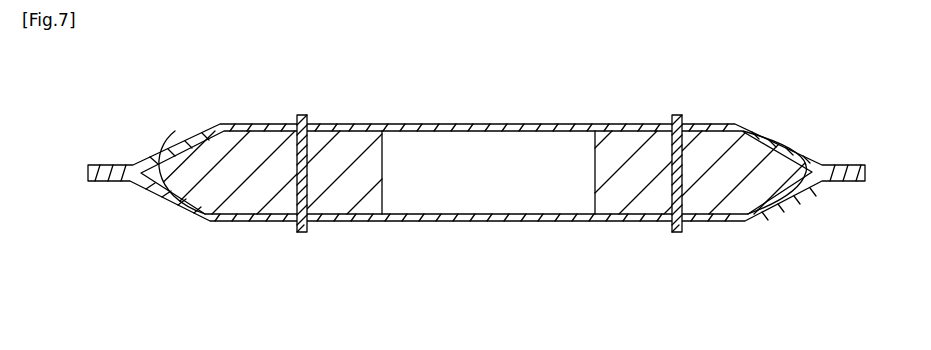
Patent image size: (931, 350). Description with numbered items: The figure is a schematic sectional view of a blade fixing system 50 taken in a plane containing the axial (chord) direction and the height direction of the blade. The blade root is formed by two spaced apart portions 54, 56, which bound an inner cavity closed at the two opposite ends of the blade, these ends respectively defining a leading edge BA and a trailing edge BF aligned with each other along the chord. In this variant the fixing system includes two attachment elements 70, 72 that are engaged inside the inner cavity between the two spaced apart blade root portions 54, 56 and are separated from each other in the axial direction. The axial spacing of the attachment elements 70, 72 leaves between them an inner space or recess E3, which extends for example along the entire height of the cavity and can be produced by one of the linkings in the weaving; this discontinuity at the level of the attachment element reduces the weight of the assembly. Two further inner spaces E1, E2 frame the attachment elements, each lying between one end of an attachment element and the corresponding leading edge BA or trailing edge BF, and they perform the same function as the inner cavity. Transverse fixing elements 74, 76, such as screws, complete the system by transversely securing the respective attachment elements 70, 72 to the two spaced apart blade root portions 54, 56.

The blade fixing system 50 is at (243, 249).
The spaced apart portion of the blade root 54 is at (449, 123).
The spaced apart portion of the blade root 56 is at (568, 222).
The attachment element 70 is at (210, 183).
The attachment element 72 is at (752, 185).
The transverse fixing element 74 is at (303, 190).
The transverse fixing element 76 is at (678, 190).
The inner space E1 is at (156, 173).
The inner space E2 is at (802, 175).
The inner space or recess E3 is at (512, 162).
The leading edge BA is at (85, 167).
The trailing edge BF is at (866, 167).